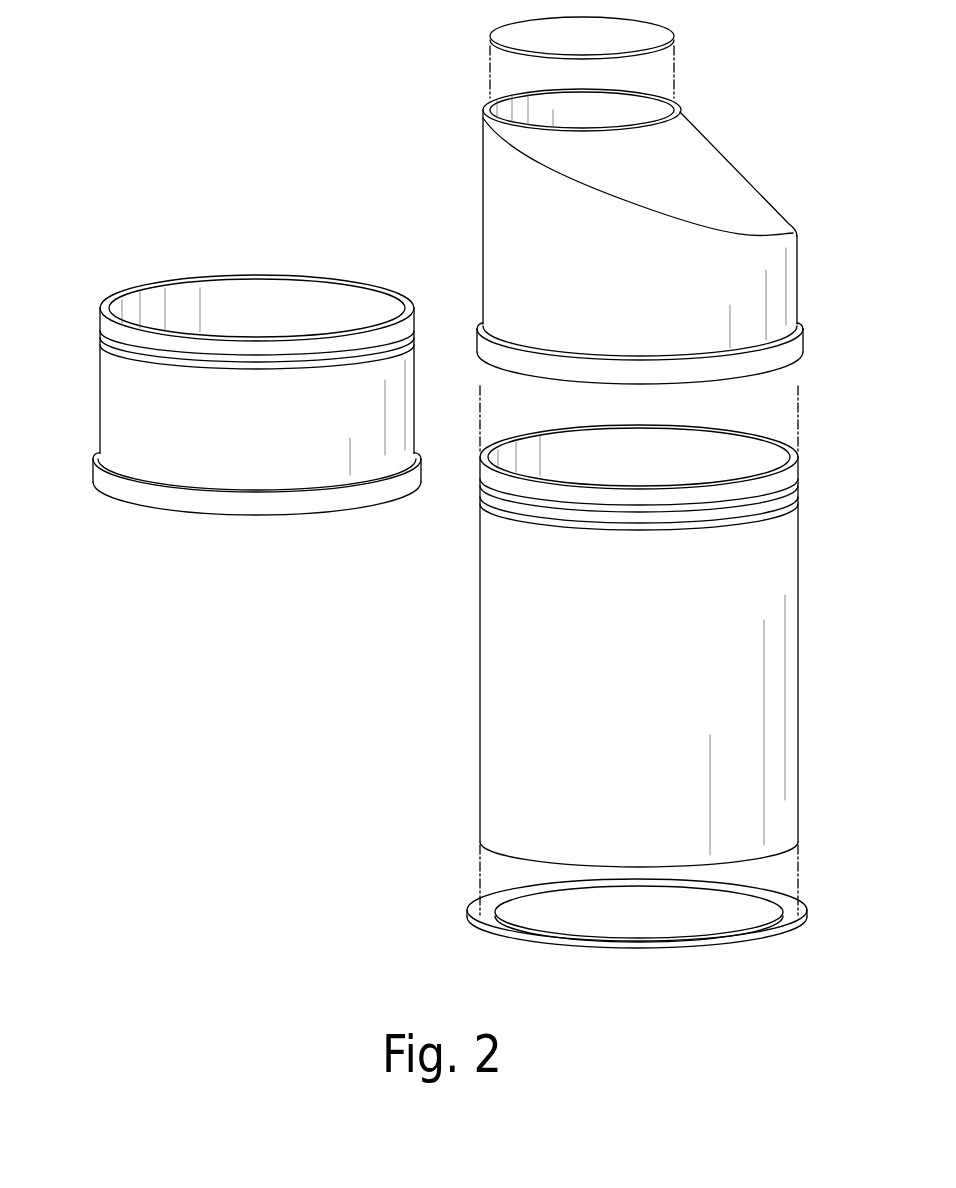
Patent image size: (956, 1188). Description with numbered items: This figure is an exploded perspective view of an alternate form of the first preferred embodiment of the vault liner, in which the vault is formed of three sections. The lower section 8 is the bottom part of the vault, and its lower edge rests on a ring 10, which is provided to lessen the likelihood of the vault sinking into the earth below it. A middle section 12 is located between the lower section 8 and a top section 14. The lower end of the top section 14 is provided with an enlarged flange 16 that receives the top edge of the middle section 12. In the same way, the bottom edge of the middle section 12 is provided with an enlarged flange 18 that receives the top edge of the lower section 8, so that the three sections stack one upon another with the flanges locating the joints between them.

The lower section 8 is at (797, 666).
The ring 10 is at (802, 926).
The middle section 12 is at (98, 380).
The top section 14 is at (796, 268).
The enlarged flange 16 is at (800, 348).
The enlarged flange 18 is at (105, 484).